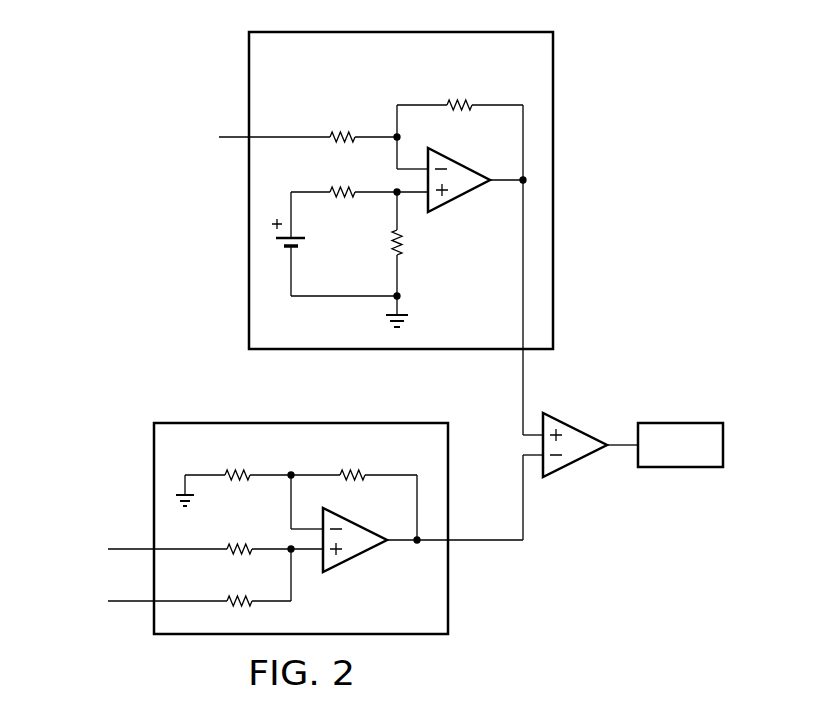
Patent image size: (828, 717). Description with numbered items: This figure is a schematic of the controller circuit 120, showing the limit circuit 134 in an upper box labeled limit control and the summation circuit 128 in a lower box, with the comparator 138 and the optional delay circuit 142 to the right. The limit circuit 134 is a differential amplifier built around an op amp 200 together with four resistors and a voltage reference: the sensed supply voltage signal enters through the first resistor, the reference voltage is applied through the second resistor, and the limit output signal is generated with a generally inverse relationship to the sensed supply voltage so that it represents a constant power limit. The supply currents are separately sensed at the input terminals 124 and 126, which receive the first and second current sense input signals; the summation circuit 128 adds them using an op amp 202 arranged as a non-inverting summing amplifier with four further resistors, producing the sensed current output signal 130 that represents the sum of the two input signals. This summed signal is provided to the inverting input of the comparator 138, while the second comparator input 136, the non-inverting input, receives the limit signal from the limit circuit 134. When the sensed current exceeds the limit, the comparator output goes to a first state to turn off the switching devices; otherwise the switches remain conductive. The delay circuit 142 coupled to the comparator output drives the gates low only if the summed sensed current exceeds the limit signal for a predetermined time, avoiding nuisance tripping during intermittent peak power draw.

The controller circuit 120 is at (673, 68).
The input terminal 124 is at (128, 603).
The input terminal 126 is at (131, 548).
The summation circuit 128 is at (152, 464).
The sensed current signal ISEN 130 is at (523, 511).
The limit circuit 134 is at (247, 72).
The second comparator input 136 is at (523, 381).
The comparator 138 is at (578, 463).
The delay circuit 142 is at (680, 468).
The op amp 200 is at (462, 197).
The op amp 202 is at (355, 557).